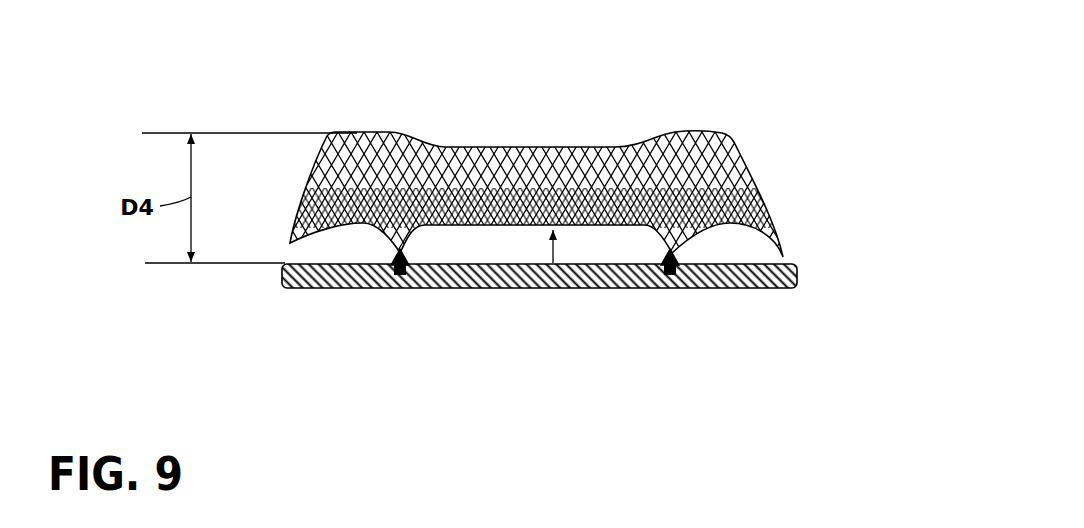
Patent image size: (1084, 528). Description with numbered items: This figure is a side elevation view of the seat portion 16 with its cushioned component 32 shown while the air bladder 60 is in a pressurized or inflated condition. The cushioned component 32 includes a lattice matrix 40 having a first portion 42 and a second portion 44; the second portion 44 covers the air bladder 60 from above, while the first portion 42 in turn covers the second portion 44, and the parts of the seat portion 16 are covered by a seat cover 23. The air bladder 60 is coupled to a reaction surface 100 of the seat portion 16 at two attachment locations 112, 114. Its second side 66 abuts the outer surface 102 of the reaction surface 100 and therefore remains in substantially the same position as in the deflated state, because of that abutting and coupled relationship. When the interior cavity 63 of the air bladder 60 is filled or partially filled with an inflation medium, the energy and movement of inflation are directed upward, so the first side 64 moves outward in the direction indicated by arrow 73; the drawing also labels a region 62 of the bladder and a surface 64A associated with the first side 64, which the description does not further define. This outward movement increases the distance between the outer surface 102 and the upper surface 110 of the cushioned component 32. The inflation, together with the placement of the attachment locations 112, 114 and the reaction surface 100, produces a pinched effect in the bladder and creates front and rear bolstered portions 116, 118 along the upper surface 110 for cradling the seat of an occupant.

The seat portion 16 is at (858, 133).
The seat cover 23 is at (700, 131).
The cushioned component 32 is at (762, 138).
The lattice matrix 40 is at (660, 136).
The first portion of the lattice matrix 42 is at (733, 172).
The second portion of the lattice matrix 44 is at (777, 218).
The air bladder 60 is at (288, 243).
The inner region 62 is at (388, 190).
The interior cavity 63 is at (476, 251).
The first side of the air bladder 64 is at (316, 173).
The central lower surface 64A is at (507, 217).
The second side of the air bladder 66 is at (343, 272).
The arrow 73 is at (553, 248).
The reaction surface 100 is at (312, 289).
The outer surface of the reaction surface 102 is at (296, 254).
The upper surface of the cushioned component 110 is at (378, 190).
The attachment location 112 is at (437, 290).
The attachment location 114 is at (678, 258).
The front bolstered portion 116 is at (360, 127).
The rear bolstered portion 118 is at (723, 125).